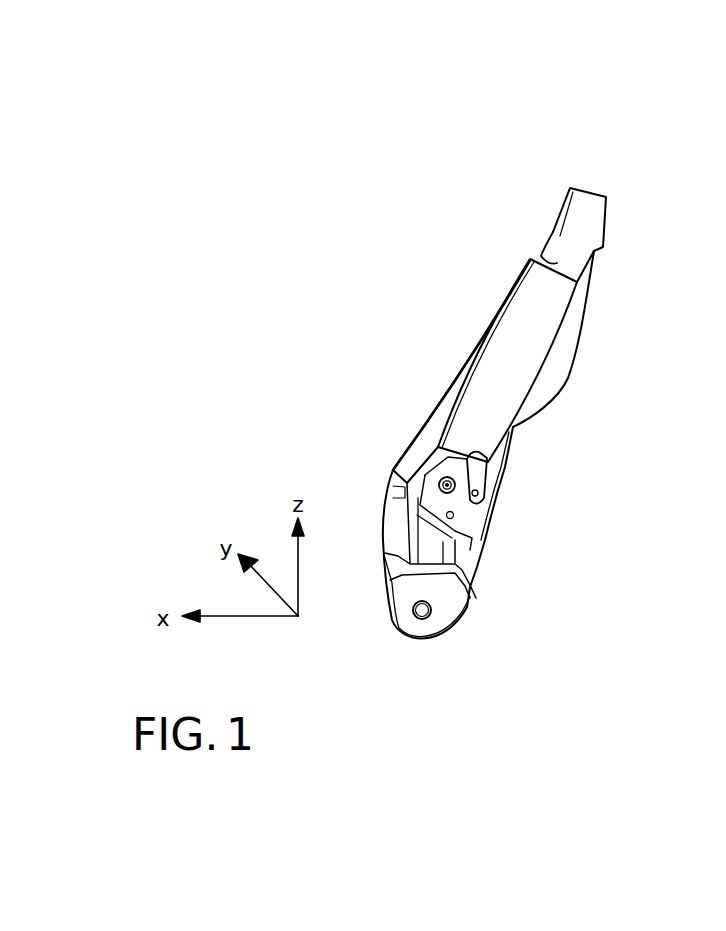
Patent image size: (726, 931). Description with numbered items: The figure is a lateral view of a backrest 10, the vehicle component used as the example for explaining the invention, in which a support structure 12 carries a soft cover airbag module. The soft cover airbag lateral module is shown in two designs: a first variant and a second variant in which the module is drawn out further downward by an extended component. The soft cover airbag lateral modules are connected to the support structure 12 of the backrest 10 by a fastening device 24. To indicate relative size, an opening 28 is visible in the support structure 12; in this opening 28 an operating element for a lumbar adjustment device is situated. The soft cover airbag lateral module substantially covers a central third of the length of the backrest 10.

The backrest 10 is at (636, 168).
The support structure 12 is at (513, 427).
The fastening device 24 is at (477, 482).
The opening 28 is at (447, 485).